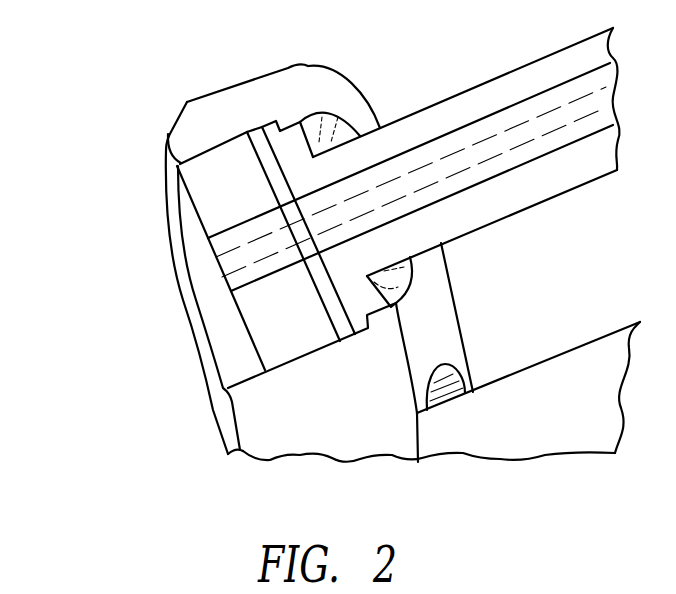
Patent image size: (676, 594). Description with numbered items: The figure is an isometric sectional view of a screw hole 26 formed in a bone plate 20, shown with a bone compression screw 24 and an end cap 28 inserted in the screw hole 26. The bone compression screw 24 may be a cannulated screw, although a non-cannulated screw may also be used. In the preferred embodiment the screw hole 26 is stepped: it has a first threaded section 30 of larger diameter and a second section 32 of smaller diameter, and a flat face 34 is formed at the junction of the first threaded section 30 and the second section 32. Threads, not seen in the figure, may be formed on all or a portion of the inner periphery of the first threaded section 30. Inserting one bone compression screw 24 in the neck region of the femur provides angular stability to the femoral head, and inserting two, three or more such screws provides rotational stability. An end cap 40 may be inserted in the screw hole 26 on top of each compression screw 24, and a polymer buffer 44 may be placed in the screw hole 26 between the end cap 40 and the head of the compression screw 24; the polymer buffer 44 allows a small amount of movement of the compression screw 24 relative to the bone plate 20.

The bone plate 20 is at (315, 436).
The bone compression screw 24 is at (447, 160).
The screw hole 26 is at (213, 300).
The end cap 28 is at (192, 232).
The first threaded section 30 is at (213, 148).
The second section 32 is at (309, 116).
The flat face 34 is at (283, 128).
The end cap 40 is at (305, 331).
The polymer buffer 44 is at (247, 132).